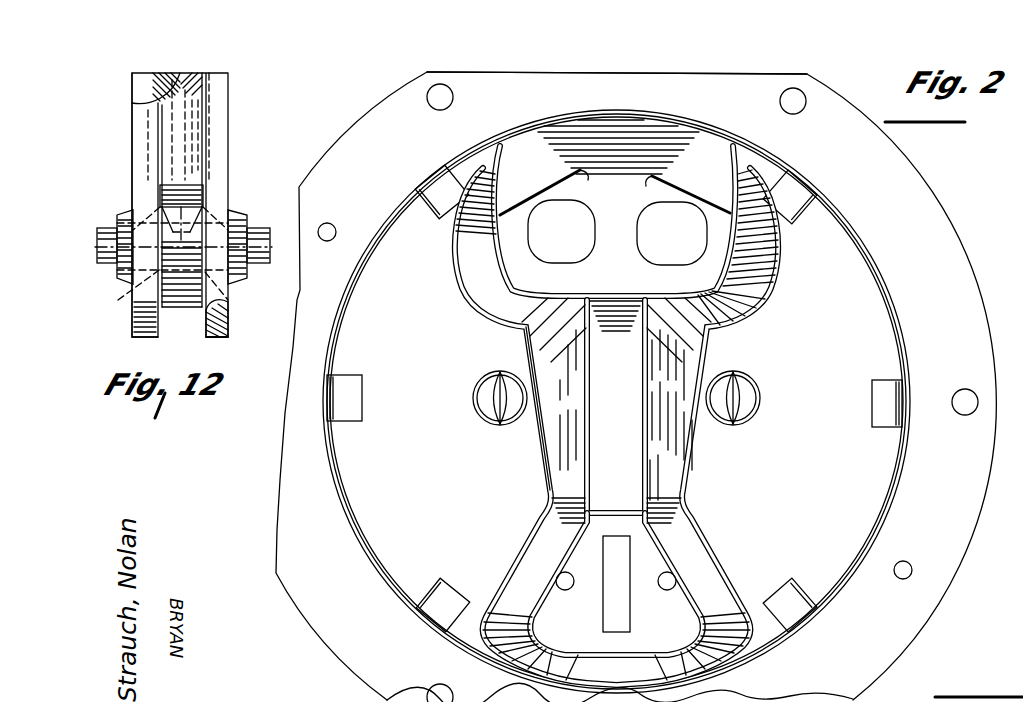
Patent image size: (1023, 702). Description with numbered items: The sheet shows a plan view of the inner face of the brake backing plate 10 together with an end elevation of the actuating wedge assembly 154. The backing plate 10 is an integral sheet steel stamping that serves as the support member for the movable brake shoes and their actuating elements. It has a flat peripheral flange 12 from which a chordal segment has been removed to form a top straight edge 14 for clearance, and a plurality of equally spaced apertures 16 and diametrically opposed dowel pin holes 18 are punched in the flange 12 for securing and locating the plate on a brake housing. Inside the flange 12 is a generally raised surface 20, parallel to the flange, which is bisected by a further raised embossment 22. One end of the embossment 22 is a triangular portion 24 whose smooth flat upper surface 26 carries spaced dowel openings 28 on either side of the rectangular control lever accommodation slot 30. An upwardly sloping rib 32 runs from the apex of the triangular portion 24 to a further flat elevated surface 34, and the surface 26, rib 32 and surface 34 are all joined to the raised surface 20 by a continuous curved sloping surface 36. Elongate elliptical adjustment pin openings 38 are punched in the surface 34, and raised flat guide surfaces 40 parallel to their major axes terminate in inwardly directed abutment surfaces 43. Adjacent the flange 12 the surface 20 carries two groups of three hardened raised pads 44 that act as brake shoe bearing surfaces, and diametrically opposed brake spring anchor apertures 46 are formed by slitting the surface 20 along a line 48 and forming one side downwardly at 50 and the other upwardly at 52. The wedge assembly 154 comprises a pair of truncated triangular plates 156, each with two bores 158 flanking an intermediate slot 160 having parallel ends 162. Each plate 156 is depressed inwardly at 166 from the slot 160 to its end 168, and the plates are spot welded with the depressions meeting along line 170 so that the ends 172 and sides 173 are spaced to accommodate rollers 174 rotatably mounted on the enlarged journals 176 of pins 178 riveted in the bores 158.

In FIG. 2, the backing plate 10 is at (292, 610).
In FIG. 2, the peripheral flange 12 is at (363, 668).
In FIG. 2, the top straight edge 14 is at (487, 72).
In FIG. 2, the apertures 16 is at (432, 104).
In FIG. 2, the dowel pin holes 18 is at (334, 229).
In FIG. 2, the raised surface 20 is at (820, 472).
In FIG. 2, the embossment 22 is at (665, 470).
In FIG. 2, the triangular portion 24 is at (540, 587).
In FIG. 2, the flat upper surface 26 is at (662, 651).
In FIG. 2, the dowel openings 28 is at (565, 590).
In FIG. 2, the control lever accommodation slot 30 is at (604, 578).
In FIG. 2, the sloping rib 32 is at (630, 465).
In FIG. 2, the flat elevated surface 34 is at (626, 290).
In FIG. 2, the curved sloping surface 36 is at (551, 451).
In FIG. 2, the adjustment pin openings 38 is at (640, 218).
In FIG. 2, the guide surfaces 40 is at (536, 206).
In FIG. 2, the abutment surfaces 43 is at (574, 177).
In FIG. 2, the raised pads 44 is at (438, 192).
In FIG. 2, the brake spring anchor apertures 46 is at (483, 372).
In FIG. 2, the slit line 48 is at (500, 421).
In FIG. 2, the downwardly formed side 50 is at (483, 406).
In FIG. 2, the upwardly formed side 52 is at (506, 388).
In FIG. 12, the actuating wedge assembly 154 is at (132, 327).
In FIG. 12, the truncated triangular metal plates 156 is at (232, 322).
In FIG. 12, the bores 158 is at (115, 222).
In FIG. 12, the intermediate slot 160 is at (220, 302).
In FIG. 12, the parallel ends 162 is at (222, 337).
In FIG. 12, the depression 166 is at (156, 119).
In FIG. 12, the end 168 is at (140, 74).
In FIG. 12, the meeting line 170 is at (177, 85).
In FIG. 12, the ends 172 is at (152, 340).
In FIG. 12, the sides 173 is at (162, 160).
In FIG. 12, the rollers 174 is at (182, 303).
In FIG. 12, the journals 176 is at (150, 281).
In FIG. 12, the pins 178 is at (260, 228).